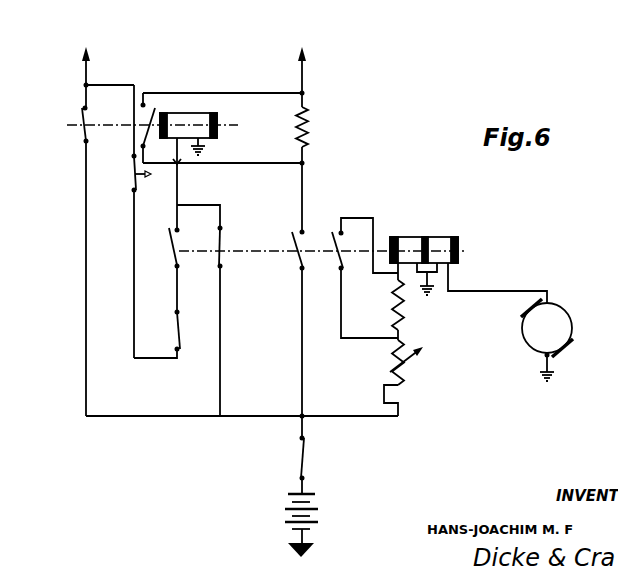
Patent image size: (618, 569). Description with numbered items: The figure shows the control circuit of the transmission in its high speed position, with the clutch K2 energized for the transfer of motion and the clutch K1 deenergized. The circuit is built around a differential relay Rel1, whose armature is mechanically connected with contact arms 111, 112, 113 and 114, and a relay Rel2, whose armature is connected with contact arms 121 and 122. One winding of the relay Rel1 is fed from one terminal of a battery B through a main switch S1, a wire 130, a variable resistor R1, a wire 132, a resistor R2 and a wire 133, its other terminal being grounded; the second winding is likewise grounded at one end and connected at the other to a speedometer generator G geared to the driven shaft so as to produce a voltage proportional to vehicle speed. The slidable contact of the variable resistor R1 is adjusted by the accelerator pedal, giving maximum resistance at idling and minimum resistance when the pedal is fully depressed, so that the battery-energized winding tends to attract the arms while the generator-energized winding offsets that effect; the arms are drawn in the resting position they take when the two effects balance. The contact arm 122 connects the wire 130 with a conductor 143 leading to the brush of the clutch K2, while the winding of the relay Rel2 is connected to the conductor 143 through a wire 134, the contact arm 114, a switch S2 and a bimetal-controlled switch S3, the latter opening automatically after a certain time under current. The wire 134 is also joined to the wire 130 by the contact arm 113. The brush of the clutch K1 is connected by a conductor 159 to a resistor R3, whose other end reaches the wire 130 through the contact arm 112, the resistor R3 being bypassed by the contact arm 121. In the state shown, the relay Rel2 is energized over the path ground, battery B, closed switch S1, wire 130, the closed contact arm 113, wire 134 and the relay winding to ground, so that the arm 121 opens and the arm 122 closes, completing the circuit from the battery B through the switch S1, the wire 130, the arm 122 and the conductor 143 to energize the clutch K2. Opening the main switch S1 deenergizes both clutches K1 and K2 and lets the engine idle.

The contact arm 111 is at (333, 243).
The contact arm 112 is at (292, 238).
The contact arm 113 is at (220, 248).
The contact arm 114 is at (164, 248).
The contact arm 121 is at (150, 120).
The contact arm 122 is at (83, 117).
The wire 130 is at (86, 215).
The wire 132 is at (401, 337).
The wire 133 is at (396, 277).
The wire 134 is at (179, 197).
The conductor 143 is at (86, 75).
The conductor 159 is at (302, 75).
The clutch K1 is at (303, 69).
The clutch K2 is at (88, 70).
The variable resistor R1 is at (410, 378).
The resistor R2 is at (388, 305).
The resistor R3 is at (315, 127).
The switch S1 is at (304, 463).
The switch S2 is at (180, 331).
The bimetal-controlled switch S3 is at (130, 173).
The battery B is at (309, 517).
The speedometer generator G is at (566, 321).
The differential relay Rel1 is at (445, 243).
The relay Rel2 is at (185, 118).